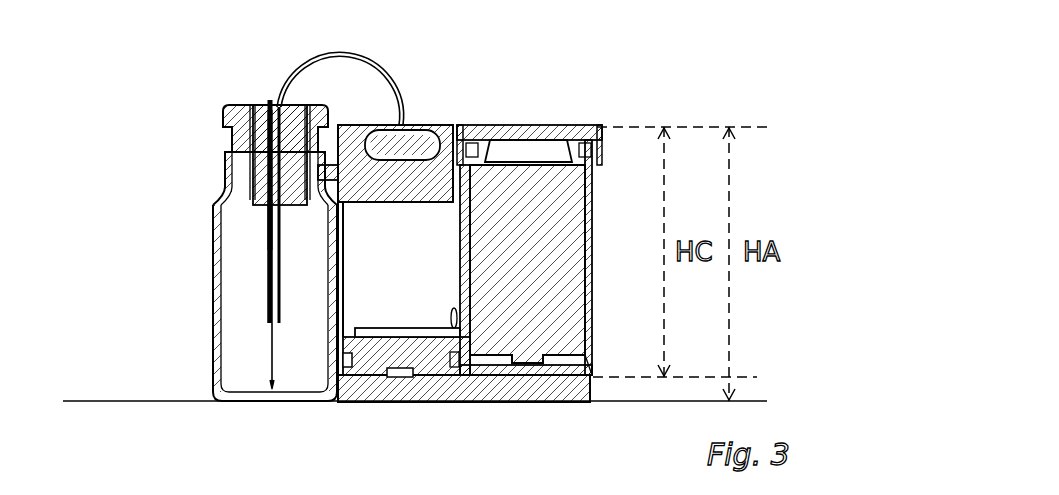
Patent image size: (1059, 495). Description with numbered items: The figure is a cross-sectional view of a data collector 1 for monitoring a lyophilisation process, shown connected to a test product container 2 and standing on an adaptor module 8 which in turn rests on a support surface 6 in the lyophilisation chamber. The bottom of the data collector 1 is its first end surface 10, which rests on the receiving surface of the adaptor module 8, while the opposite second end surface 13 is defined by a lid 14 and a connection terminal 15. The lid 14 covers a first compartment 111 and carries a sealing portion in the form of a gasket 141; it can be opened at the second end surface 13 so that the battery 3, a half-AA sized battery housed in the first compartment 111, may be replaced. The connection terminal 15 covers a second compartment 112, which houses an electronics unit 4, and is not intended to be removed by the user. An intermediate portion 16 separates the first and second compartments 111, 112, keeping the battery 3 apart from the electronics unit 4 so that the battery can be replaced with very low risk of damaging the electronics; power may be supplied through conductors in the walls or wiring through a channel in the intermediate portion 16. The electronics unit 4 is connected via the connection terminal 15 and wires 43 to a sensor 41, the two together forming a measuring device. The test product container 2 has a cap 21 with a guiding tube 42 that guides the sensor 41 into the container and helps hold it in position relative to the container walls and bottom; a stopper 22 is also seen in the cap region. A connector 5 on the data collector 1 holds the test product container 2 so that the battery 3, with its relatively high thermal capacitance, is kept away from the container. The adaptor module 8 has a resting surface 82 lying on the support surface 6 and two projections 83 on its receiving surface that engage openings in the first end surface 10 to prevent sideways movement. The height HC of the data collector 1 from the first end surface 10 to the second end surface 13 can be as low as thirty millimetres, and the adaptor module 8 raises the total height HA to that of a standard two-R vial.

The data collector 1 is at (598, 195).
The test product container 2 is at (200, 317).
The battery 3 is at (558, 335).
The electronics unit 4 is at (377, 277).
The connector 5 is at (352, 125).
The support surface 6 is at (93, 400).
The adaptor module 8 is at (363, 405).
The first end surface 10 is at (517, 380).
The second end surface 13 is at (558, 125).
The lid 14 is at (525, 125).
The connection terminal 15 is at (433, 125).
The intermediate portion 16 is at (463, 250).
The cap 21 is at (228, 110).
The vial stopper 22 is at (232, 172).
The sensor 41 is at (267, 355).
The guiding tube 42 is at (268, 274).
The wires 43 is at (282, 82).
The resting surface 82 is at (447, 400).
The projections 83 is at (403, 380).
The first compartment 111 is at (590, 365).
The second compartment 112 is at (337, 252).
The gasket 141 is at (600, 140).